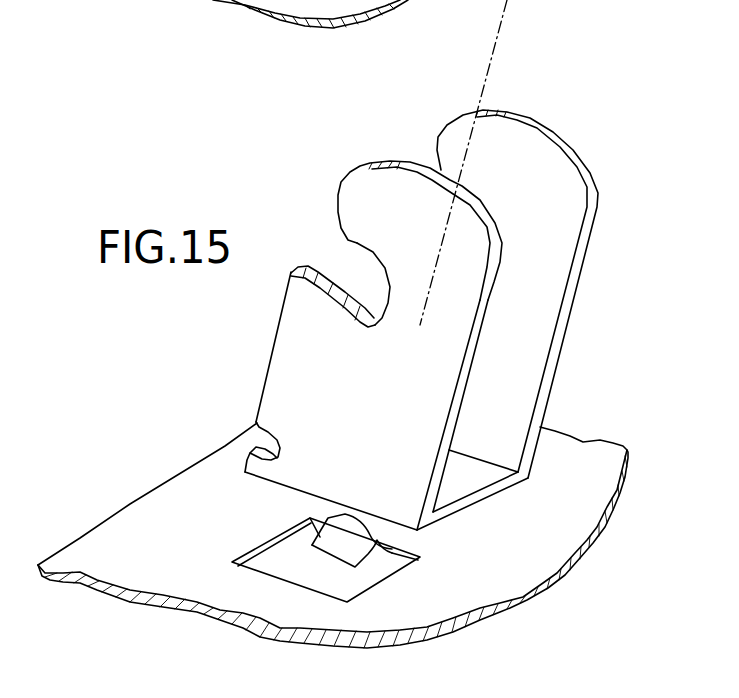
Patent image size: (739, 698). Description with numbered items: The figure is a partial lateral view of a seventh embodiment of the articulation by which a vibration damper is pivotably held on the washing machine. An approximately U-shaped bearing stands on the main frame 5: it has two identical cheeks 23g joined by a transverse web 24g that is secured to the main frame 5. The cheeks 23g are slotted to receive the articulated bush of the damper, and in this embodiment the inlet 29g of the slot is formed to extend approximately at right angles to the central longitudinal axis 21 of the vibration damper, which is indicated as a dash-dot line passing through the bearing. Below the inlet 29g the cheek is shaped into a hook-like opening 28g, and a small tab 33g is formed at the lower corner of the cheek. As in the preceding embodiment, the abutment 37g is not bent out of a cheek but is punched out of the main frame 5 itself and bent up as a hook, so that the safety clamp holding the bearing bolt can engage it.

The main frame 5 is at (95, 550).
The central longitudinal axis 21 is at (497, 42).
The cheek 23g is at (450, 310).
The transverse web 24g is at (480, 502).
The hook recess 28g is at (374, 327).
The inlet 29g is at (355, 242).
The locating tab 33g is at (272, 445).
The abutment 37g is at (335, 538).